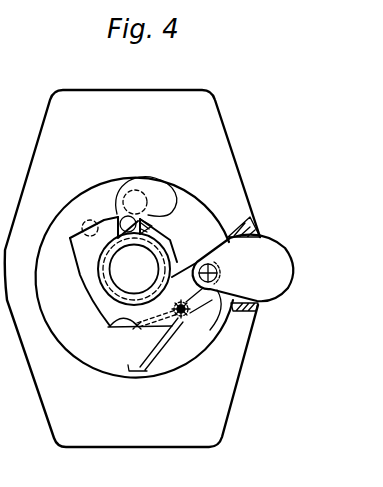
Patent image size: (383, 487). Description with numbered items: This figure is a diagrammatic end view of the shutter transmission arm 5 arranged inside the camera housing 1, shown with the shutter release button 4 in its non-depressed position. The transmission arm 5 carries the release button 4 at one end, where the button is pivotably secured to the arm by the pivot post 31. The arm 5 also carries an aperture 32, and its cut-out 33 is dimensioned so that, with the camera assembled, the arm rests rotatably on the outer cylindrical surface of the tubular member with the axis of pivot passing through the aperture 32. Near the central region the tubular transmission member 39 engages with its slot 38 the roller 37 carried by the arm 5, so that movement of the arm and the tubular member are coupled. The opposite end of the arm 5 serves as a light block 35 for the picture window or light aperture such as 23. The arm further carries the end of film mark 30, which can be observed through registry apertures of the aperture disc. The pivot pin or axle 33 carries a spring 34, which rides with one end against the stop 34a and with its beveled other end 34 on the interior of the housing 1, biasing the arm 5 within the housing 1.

The housing 1 is at (214, 107).
The shutter release button 4 is at (286, 258).
The transmission arm 5 is at (97, 310).
The light aperture 23 is at (130, 198).
The end of film mark 30 is at (84, 223).
The pivot post 31 is at (250, 218).
The aperture 32 is at (183, 314).
The pivot pin or axle 33 is at (185, 312).
The spring 34 is at (152, 372).
The stop 34a is at (112, 327).
The light block 35 is at (163, 188).
The roller 37 is at (124, 218).
The slot 38 is at (141, 233).
The tubular transmission member 39 is at (100, 278).